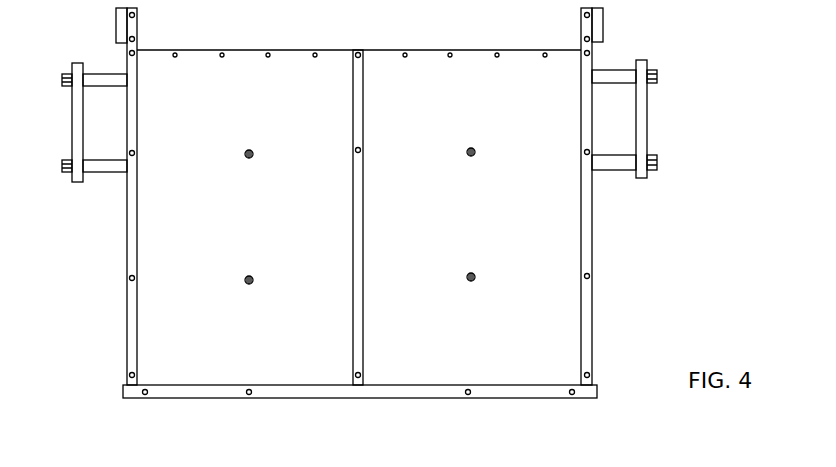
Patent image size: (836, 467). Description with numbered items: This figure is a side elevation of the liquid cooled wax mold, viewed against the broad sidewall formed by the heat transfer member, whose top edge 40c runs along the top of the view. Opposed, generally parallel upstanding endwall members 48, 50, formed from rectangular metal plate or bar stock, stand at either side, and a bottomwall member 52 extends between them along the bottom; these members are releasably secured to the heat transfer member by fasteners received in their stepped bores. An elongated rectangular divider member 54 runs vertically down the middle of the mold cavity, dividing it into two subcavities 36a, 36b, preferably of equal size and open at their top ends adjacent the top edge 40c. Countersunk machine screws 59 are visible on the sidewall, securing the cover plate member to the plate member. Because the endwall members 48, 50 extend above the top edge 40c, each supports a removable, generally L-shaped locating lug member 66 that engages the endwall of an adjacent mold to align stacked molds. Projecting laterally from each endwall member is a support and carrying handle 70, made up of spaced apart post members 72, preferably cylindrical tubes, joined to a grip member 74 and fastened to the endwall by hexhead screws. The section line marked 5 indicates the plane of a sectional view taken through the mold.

The first compartment 36a is at (275, 123).
The second compartment 36b is at (485, 123).
The top rail 40c is at (336, 50).
The left side frame member 48 is at (127, 205).
The right side frame member 50 is at (592, 228).
The bottom frame member 52 is at (427, 399).
The center divider post 54 is at (358, 237).
The bolt 59 is at (254, 159).
The mounting block 66 is at (116, 25).
The mounting plate 70 is at (66, 122).
The bracket arm 72 is at (100, 74).
The fastener 74 is at (70, 142).
The section line 5- 5 is at (111, 279).